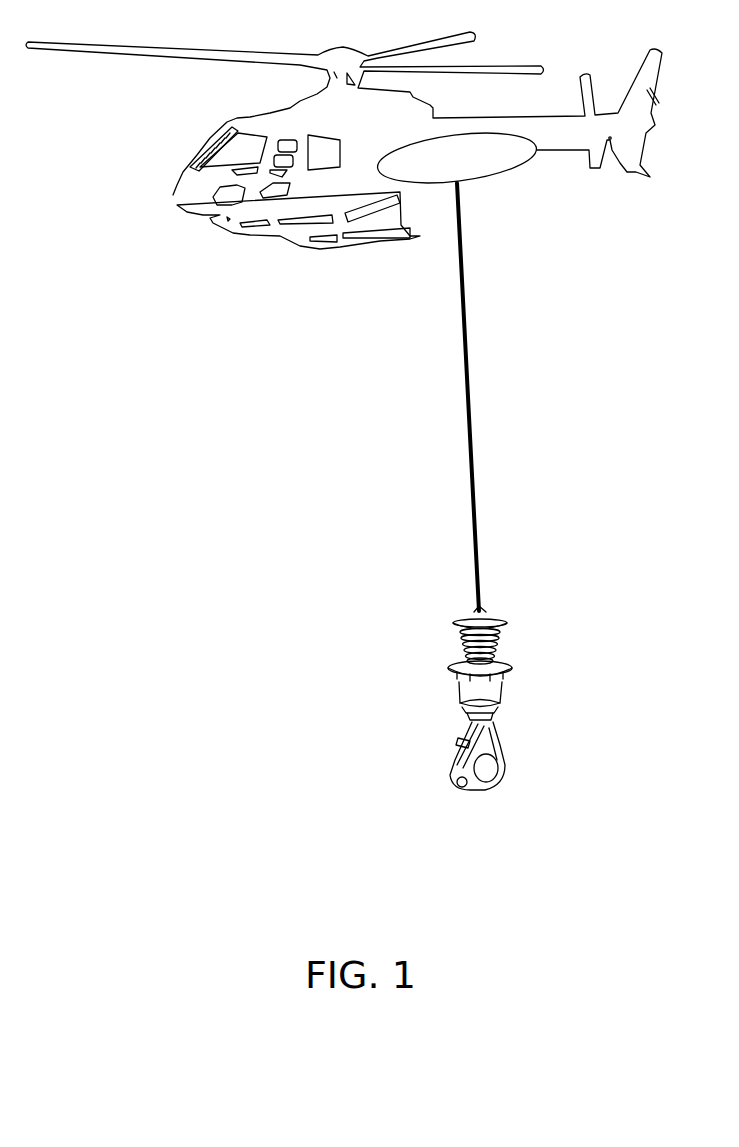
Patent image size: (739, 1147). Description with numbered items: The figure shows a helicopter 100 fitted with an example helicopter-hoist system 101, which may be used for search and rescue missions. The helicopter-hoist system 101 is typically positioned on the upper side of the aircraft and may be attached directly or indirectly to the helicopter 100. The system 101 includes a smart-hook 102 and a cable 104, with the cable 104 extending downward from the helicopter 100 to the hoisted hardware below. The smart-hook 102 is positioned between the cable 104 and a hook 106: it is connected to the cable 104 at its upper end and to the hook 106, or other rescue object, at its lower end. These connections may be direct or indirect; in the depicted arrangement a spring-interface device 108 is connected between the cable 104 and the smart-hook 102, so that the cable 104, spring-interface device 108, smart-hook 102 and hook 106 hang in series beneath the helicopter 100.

The helicopter 100 is at (565, 137).
The helicopter-hoist system 101 is at (483, 165).
The smart-hook 102 is at (502, 662).
The cable 104 is at (470, 387).
The hook 106 is at (490, 780).
The spring-interface device 108 is at (468, 619).